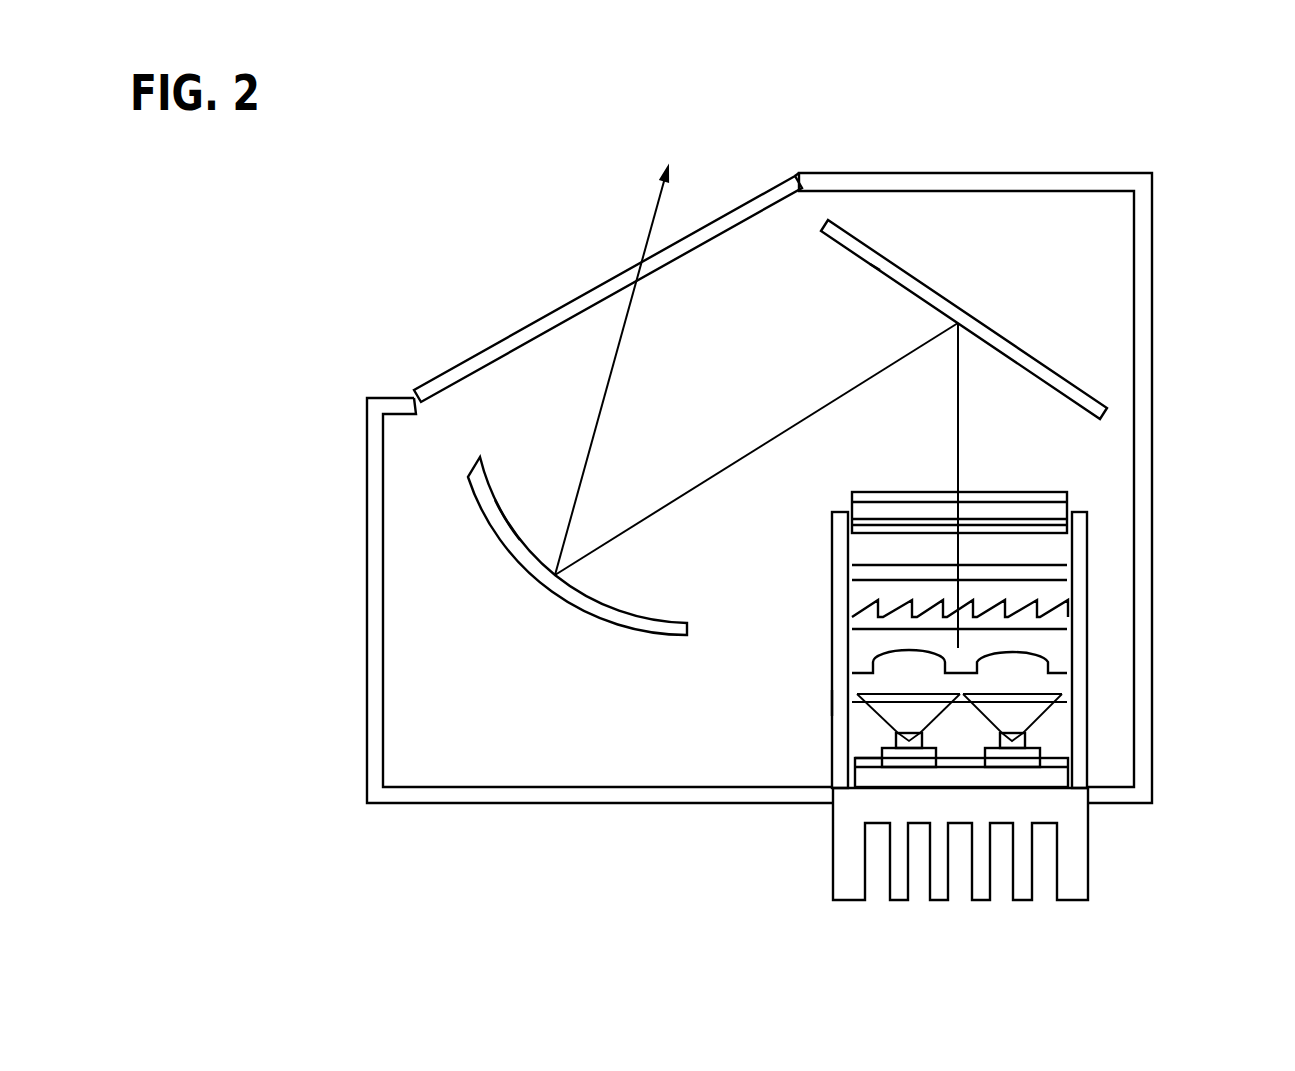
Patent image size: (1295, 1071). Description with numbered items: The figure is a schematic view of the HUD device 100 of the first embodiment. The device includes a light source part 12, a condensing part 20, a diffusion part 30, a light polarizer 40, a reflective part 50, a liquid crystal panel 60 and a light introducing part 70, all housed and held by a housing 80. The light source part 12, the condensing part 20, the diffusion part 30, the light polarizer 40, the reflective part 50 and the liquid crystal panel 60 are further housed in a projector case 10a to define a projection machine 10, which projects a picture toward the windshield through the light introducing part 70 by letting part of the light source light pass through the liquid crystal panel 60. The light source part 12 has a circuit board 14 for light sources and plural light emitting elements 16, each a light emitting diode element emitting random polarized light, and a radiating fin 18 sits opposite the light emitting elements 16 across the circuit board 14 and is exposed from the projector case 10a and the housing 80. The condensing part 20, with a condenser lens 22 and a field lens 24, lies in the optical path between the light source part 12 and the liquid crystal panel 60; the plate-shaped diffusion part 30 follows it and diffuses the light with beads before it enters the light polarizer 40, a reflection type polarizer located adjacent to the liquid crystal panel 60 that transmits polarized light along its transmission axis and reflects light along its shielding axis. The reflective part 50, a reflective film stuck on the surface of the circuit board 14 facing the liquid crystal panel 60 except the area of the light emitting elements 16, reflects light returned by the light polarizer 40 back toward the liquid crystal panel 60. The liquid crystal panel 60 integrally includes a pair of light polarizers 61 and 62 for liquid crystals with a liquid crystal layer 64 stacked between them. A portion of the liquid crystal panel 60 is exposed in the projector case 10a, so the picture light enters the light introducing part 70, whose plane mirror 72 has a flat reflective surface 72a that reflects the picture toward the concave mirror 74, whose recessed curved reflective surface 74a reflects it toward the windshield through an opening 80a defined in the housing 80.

The HUD device 100 is at (356, 663).
The housing 80 is at (367, 516).
The opening 80a is at (797, 186).
The light introducing part 70 is at (688, 162).
The plane mirror 72 is at (822, 226).
The reflective surface 72a is at (872, 268).
The concave mirror 74 is at (480, 455).
The reflective surface 74a is at (503, 514).
The projection machine 10 is at (826, 602).
The projector case 10a is at (832, 703).
The light polarizer 40 is at (1068, 533).
The liquid crystal panel 60 is at (1228, 407).
The light polarizer for liquid crystals 62 is at (1067, 497).
The liquid crystal layer 64 is at (1067, 510).
The light polarizer for liquid crystals 61 is at (1067, 527).
The diffusion part 30 is at (1060, 568).
The condensing part 20 is at (1228, 607).
The field lens 24 is at (1060, 624).
The condenser lens 22 is at (1060, 667).
The light source part 12 is at (1228, 693).
The light emitting element 16 is at (938, 743).
The circuit board for light sources 14 is at (1068, 779).
The reflective part 50 is at (853, 753).
The radiating fin 18 is at (1058, 858).